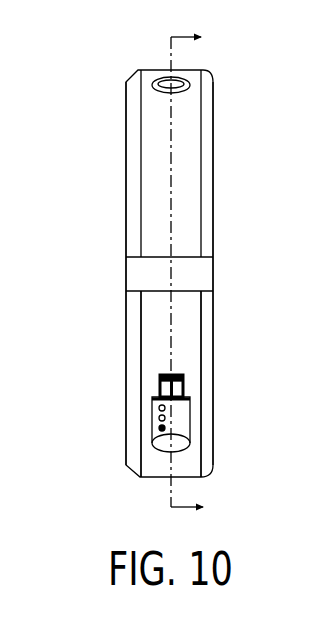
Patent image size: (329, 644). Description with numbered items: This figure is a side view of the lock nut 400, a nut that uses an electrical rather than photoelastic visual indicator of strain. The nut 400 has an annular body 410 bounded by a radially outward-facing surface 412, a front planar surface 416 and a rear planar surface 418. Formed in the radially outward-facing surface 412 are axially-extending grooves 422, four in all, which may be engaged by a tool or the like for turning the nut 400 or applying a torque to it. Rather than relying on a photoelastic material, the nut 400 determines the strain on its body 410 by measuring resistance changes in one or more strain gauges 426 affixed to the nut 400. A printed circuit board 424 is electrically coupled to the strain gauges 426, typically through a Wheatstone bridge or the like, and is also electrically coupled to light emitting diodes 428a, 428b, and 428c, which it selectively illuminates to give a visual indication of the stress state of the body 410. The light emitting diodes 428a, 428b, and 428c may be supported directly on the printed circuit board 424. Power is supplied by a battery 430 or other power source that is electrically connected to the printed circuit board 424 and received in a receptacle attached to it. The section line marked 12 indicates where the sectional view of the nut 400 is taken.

The nut 400 is at (263, 88).
The section line 12- 12 is at (202, 273).
The annular body 410 is at (192, 330).
The radially outward-facing surface 412 is at (190, 222).
The front planar surface 416 is at (214, 410).
The rear planar surface 418 is at (126, 350).
The axially-extending grooves 422 is at (203, 275).
The printed circuit board 424 is at (183, 417).
The strain gauges 426 is at (186, 380).
The light emitting diode 428a is at (159, 408).
The light emitting diode 428b is at (159, 418).
The light emitting diode 428c is at (159, 428).
The battery 430 is at (190, 448).